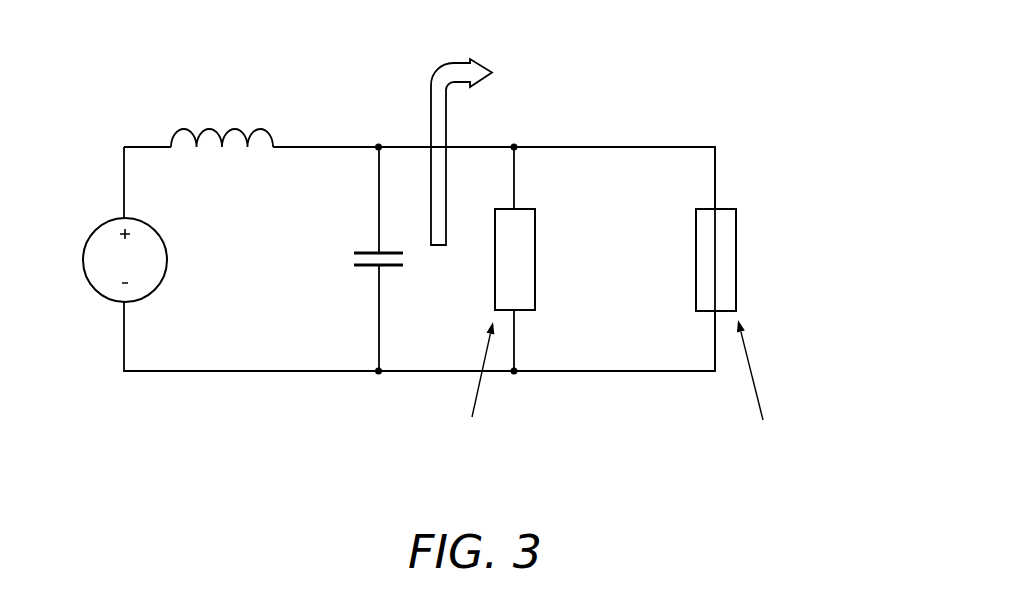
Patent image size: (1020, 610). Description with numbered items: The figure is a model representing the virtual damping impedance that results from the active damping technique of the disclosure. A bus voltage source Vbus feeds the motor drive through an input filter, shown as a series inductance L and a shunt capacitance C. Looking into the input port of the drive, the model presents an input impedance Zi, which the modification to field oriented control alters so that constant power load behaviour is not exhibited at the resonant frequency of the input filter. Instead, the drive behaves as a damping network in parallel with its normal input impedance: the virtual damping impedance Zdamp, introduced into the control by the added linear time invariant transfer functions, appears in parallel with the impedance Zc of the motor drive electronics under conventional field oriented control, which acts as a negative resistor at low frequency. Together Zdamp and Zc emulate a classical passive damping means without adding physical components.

The inductor L is at (222, 125).
The capacitor C is at (366, 258).
The bus voltage source Vbus is at (101, 260).
The input impedance Zi(S) Zi is at (461, 133).
The virtual damping impedance Zdamp(Ad) Zdamp is at (514, 328).
The impedance Zc of MDE corresponding to conventional FOC Zc is at (757, 358).